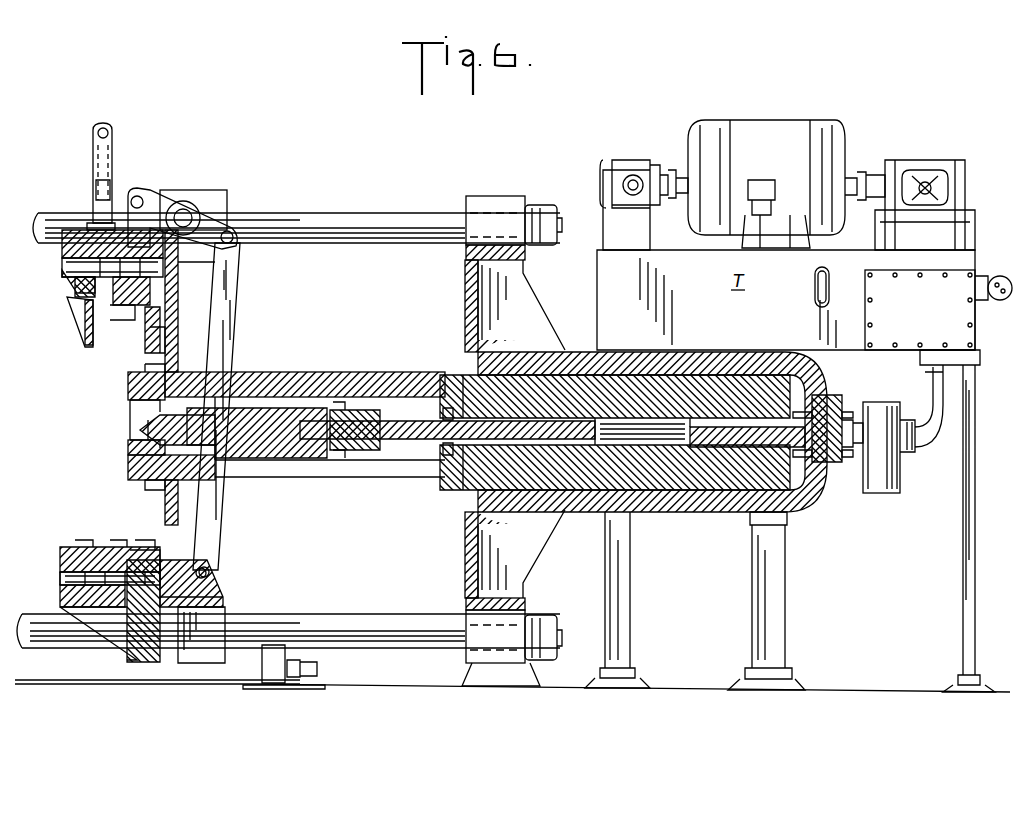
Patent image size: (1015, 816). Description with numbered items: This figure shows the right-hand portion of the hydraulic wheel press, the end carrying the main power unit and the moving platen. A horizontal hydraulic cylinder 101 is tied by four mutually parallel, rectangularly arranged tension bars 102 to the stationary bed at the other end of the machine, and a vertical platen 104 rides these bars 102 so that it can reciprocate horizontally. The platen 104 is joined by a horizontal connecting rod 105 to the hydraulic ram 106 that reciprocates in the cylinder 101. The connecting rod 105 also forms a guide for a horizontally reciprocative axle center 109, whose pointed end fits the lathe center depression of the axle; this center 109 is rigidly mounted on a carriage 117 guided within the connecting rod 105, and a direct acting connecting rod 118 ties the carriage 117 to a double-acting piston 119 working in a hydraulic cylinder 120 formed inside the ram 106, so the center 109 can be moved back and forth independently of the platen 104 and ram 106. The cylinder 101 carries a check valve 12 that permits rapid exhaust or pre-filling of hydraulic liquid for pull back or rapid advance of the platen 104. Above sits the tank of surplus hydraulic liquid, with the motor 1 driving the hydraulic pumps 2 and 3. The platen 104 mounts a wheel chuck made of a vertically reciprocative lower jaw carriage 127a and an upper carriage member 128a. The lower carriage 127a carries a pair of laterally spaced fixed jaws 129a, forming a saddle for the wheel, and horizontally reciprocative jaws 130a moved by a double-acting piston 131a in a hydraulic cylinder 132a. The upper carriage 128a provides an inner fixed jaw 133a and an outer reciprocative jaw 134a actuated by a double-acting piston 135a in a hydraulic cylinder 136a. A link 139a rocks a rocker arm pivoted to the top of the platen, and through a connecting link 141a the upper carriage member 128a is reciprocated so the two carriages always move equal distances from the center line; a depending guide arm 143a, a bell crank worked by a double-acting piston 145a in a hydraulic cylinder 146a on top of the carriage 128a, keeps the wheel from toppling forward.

The motor 1 is at (768, 137).
The hydraulic pump 2 is at (633, 165).
The hydraulic pump 3 is at (912, 162).
The check valve 12 is at (890, 473).
The hydraulic cylinder 101 is at (582, 506).
The tension bars 102 is at (354, 218).
The vertical platen 104 is at (173, 292).
The connecting rod 105 is at (264, 373).
The hydraulic ram 106 is at (518, 358).
The axle center 109 is at (138, 431).
The carriage 117 is at (283, 448).
The direct acting connecting rod 118 is at (365, 456).
The double-acting piston 119 is at (586, 372).
The hydraulic cylinder 120 is at (648, 442).
The lower jaw carriage 127a is at (107, 625).
The upper carriage member 128a is at (152, 300).
The fixed jaws 129a is at (113, 547).
The reciprocative jaws 130a is at (70, 563).
The double-acting piston 131a is at (158, 556).
The hydraulic cylinder 132a is at (165, 598).
The inner fixed jaw 133a is at (118, 305).
The outer reciprocative jaw 134a is at (66, 287).
The double-acting piston 135a is at (150, 232).
The hydraulic cylinder 136a is at (182, 265).
The link 139a is at (227, 279).
The connecting link 141a is at (130, 263).
The depending guide arm 143a is at (82, 330).
The double-acting piston 145a is at (112, 181).
The hydraulic cylinder 146a is at (98, 197).